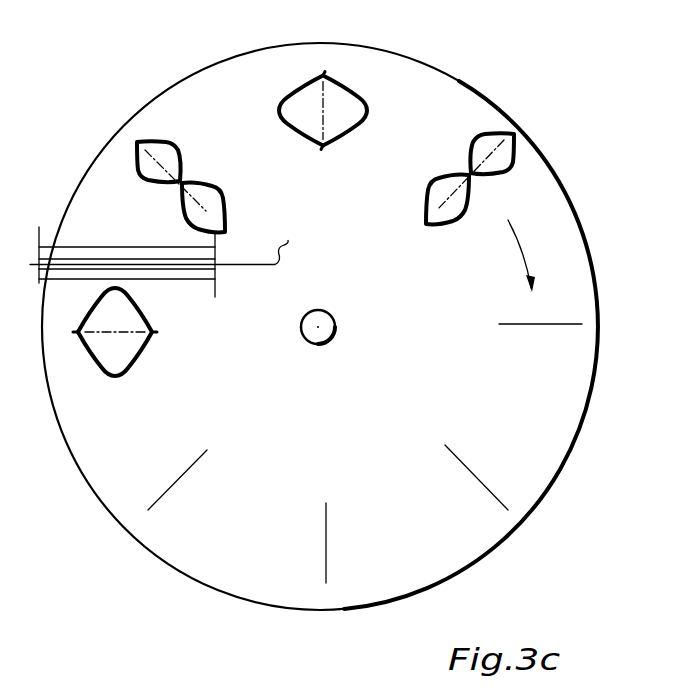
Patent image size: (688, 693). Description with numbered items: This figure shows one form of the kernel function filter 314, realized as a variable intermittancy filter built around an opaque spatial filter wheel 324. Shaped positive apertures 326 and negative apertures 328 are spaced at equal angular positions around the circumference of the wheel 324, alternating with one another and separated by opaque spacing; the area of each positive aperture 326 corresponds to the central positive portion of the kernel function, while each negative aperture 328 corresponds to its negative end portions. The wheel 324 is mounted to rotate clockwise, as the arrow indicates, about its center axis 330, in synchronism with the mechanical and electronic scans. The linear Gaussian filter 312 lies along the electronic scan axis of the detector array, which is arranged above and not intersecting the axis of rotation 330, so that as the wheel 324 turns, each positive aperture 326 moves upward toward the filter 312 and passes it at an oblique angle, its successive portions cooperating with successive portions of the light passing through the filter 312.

The linear Gaussian filter 312 is at (43, 243).
The kernel function filter 314 is at (131, 587).
The opaque spatial filter wheel 324 is at (598, 268).
The positive aperture 326 is at (352, 125).
The negative aperture 328 is at (183, 162).
The center axis of rotation 330 is at (333, 333).